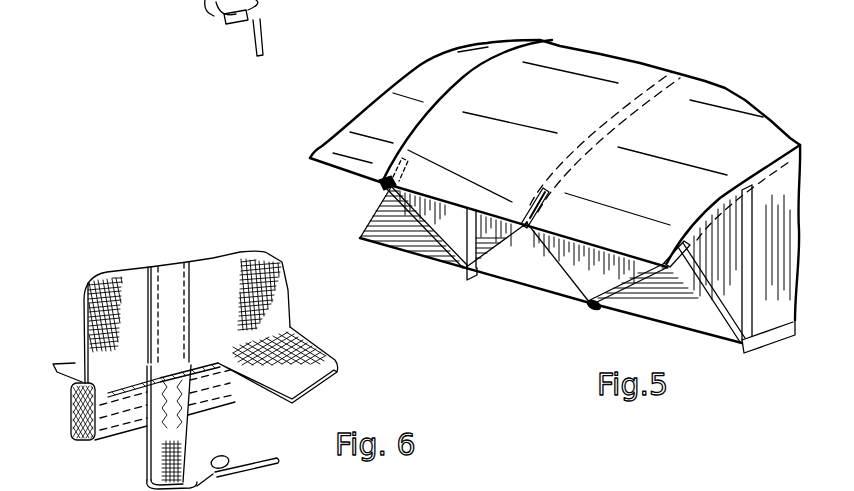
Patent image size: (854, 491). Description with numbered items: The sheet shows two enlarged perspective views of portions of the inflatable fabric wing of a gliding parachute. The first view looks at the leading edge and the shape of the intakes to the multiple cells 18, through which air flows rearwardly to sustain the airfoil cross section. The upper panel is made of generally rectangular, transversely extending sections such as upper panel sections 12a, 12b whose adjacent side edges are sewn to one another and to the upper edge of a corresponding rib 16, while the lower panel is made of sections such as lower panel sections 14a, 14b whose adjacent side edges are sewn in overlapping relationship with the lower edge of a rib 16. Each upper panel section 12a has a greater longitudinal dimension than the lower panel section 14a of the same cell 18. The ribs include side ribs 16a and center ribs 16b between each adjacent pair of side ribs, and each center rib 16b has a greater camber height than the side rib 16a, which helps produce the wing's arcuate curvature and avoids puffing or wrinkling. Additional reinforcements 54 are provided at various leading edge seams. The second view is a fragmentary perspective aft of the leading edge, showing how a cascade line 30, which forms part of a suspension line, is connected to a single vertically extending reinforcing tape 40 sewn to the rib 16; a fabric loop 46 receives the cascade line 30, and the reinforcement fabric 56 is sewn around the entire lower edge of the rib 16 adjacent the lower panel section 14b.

In FIG. 5, the upper panel section 12a is at (589, 65).
In FIG. 5, the upper panel section 12b is at (707, 110).
In FIG. 5, the lower panel section 14a is at (537, 292).
In FIG. 5, the lower panel section 14b is at (680, 323).
In FIG. 6, the lower panel section 14b is at (323, 377).
In FIG. 6, the rib 16 is at (217, 260).
In FIG. 5, the side rib 16a is at (780, 180).
In FIG. 5, the center rib 16b is at (567, 245).
In FIG. 5, the cell 18 is at (502, 267).
In FIG. 6, the cascade line 30 is at (243, 462).
In FIG. 6, the reinforcing tape 40 is at (167, 273).
In FIG. 6, the fabric loop 46 is at (177, 437).
In FIG. 5, the additional reinforcement 54 is at (530, 193).
In FIG. 6, the reinforcement fabric 56 is at (117, 433).